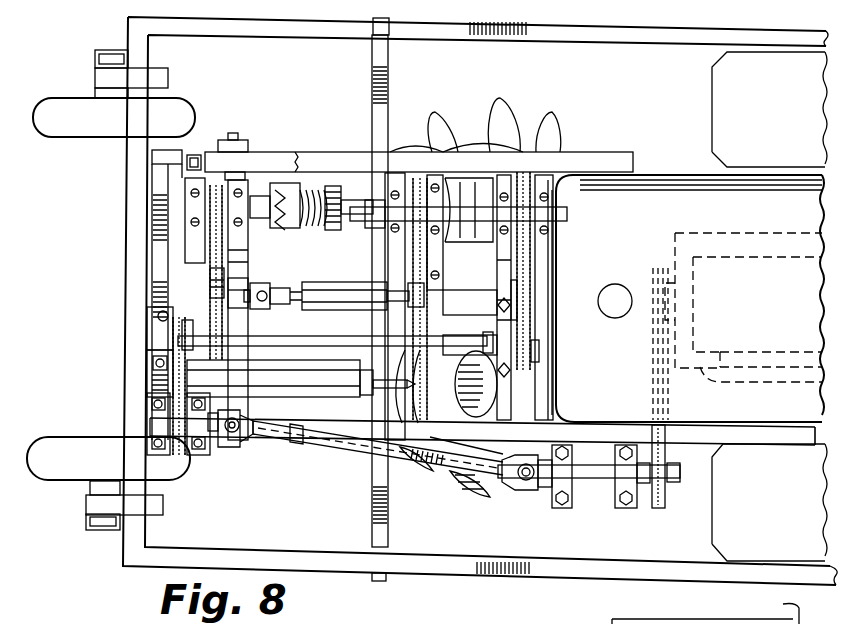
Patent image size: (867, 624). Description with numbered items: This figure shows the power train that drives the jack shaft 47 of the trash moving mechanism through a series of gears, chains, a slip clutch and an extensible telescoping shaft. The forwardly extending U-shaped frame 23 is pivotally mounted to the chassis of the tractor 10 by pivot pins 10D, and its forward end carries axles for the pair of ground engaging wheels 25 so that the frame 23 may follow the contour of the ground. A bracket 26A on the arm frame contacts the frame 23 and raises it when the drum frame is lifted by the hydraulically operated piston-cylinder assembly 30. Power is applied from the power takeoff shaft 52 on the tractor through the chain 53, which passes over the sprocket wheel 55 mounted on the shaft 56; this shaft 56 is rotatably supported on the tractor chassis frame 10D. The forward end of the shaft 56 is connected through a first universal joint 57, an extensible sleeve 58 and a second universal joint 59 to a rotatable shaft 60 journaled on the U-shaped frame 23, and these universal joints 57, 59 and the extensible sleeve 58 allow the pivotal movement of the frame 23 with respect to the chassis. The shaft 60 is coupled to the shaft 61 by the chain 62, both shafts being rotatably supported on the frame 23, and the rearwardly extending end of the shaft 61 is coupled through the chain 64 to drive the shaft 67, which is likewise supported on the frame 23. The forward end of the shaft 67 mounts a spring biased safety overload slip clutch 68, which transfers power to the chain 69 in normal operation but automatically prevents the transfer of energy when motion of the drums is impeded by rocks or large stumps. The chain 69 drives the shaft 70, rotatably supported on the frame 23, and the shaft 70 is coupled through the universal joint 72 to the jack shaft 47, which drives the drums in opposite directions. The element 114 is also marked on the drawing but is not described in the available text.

The tractor 10 is at (351, 164).
The pivot pin / tractor chassis frame 10D is at (700, 432).
The U-shaped frame 23 is at (286, 32).
The ground engaging wheels 25 is at (75, 108).
The bracket 26A is at (388, 66).
The piston-cylinder assembly 30 is at (300, 399).
The jack shaft 47 is at (345, 293).
The power takeoff shaft 52 is at (652, 302).
The chain 53 is at (652, 352).
The sprocket wheel 55 is at (664, 456).
The shaft 56 is at (589, 480).
The first universal joint 57 is at (538, 488).
The extensible sleeve 58 is at (348, 446).
The second universal joint 59 is at (247, 444).
The rotatable shaft 60 is at (156, 415).
The shaft 61 is at (290, 337).
The chain 62 is at (180, 312).
The chain 64 is at (520, 269).
The shaft 67 is at (458, 213).
The spring biased safety overload slip clutch 68 is at (289, 175).
The chain 69 is at (196, 272).
The shaft 70 is at (236, 286).
The universal joint 72 is at (277, 289).
The bracket 114 is at (772, 609).